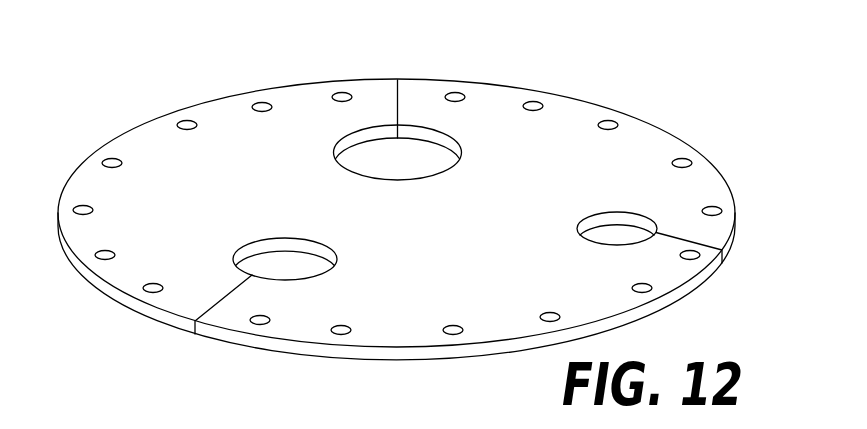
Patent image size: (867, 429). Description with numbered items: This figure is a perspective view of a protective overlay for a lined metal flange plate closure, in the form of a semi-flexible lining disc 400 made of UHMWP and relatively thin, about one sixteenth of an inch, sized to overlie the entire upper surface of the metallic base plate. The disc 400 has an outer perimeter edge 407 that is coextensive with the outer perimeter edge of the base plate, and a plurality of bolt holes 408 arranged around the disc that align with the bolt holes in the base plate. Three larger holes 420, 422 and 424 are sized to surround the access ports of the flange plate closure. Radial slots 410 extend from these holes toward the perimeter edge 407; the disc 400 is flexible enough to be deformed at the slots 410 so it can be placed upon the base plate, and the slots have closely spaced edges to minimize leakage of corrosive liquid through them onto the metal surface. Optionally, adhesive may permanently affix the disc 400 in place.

The lining disc 400 is at (187, 102).
The outer perimeter edge 407 is at (70, 176).
The bolt holes 408 is at (455, 92).
The radial slots 410 is at (397, 101).
The hole 420 is at (452, 136).
The hole 422 is at (328, 245).
The hole 424 is at (598, 212).